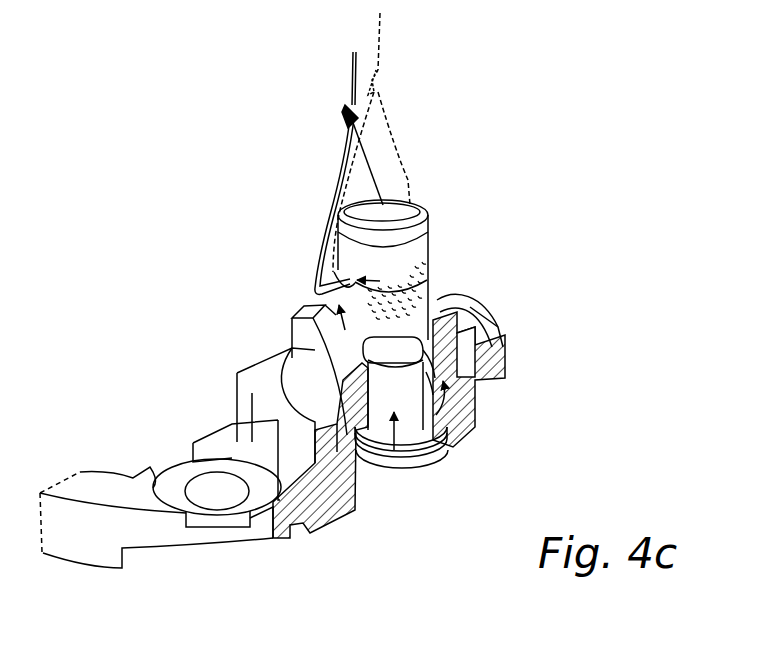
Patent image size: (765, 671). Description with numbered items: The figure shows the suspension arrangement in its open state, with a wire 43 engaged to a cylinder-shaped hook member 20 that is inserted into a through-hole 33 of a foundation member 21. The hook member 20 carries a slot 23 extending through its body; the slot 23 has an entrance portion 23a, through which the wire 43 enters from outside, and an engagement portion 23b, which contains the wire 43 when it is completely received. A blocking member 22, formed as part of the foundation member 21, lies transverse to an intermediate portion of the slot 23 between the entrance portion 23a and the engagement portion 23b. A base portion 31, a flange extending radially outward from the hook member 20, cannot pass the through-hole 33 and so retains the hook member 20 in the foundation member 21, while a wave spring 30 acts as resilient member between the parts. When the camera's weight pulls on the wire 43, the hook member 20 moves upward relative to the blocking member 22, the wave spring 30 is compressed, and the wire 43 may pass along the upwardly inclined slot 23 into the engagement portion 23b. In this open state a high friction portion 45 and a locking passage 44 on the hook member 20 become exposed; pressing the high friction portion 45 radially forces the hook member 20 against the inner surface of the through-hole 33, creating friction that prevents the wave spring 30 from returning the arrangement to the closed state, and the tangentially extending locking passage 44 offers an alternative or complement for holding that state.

The hook member 20 is at (408, 257).
The foundation member 21 is at (307, 410).
The blocking member 22 is at (292, 347).
The slot 23 is at (341, 315).
The entrance portion 23a is at (300, 298).
The engagement portion 23b is at (424, 300).
The wave spring 30 is at (452, 432).
The base portion 31 is at (420, 447).
The through-hole 33 is at (433, 375).
The wire 43 is at (343, 157).
The locking passage 44 is at (478, 343).
The high friction portion 45 is at (438, 302).